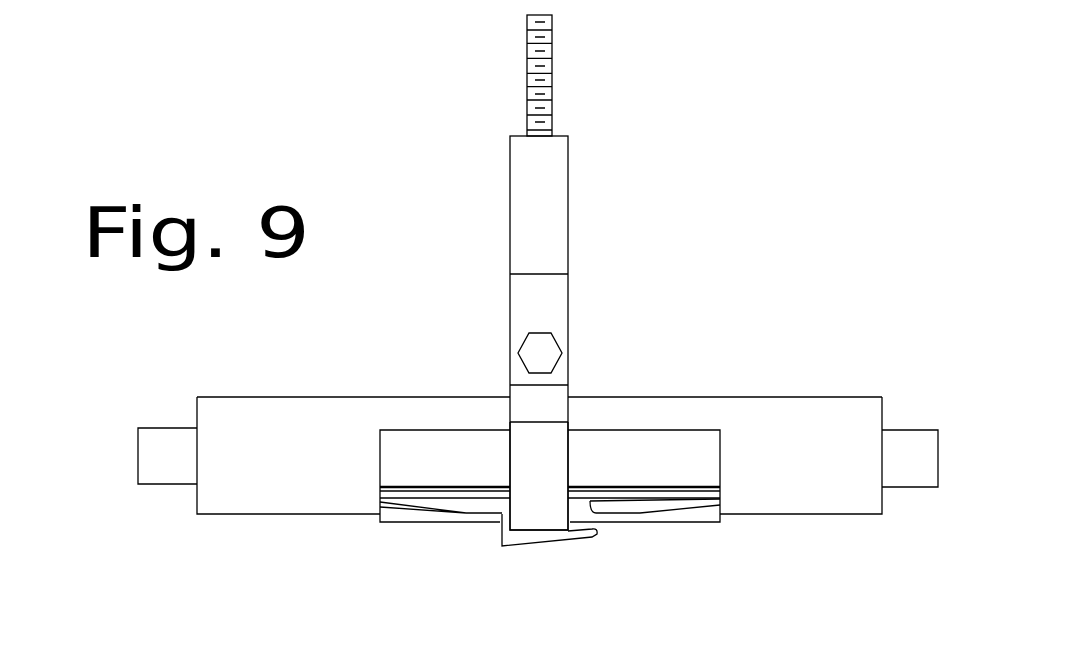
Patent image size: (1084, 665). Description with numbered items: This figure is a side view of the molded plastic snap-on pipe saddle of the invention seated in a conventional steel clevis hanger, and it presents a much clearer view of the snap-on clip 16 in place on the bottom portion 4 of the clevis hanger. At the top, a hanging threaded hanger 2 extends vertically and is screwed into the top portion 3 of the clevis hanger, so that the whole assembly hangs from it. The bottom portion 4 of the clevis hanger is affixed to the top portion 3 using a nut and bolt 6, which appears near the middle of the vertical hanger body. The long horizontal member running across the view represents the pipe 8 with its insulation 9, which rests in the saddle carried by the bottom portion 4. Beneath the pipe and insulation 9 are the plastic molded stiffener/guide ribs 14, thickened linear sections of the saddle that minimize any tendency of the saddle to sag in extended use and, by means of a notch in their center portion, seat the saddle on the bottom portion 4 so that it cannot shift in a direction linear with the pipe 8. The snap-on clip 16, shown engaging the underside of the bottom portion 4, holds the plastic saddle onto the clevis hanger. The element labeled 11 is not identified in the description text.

The hanging threaded hanger 2 is at (629, 75).
The top portion of the clevis hanger 3 is at (634, 333).
The bottom portion of the clevis hanger 4 is at (696, 521).
The nut and bolt 6 is at (640, 324).
The pipe 8 is at (132, 404).
The insulation 9 is at (567, 399).
The inner block 11 is at (508, 419).
The stiffener/guide ribs 14 is at (502, 561).
The snap-on clip 16 is at (606, 578).